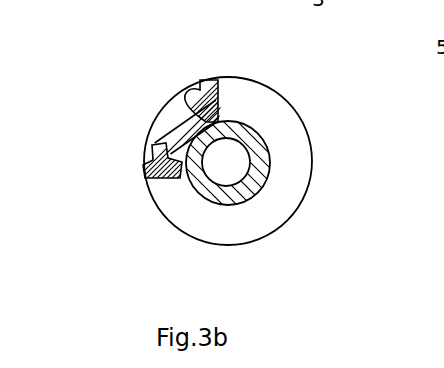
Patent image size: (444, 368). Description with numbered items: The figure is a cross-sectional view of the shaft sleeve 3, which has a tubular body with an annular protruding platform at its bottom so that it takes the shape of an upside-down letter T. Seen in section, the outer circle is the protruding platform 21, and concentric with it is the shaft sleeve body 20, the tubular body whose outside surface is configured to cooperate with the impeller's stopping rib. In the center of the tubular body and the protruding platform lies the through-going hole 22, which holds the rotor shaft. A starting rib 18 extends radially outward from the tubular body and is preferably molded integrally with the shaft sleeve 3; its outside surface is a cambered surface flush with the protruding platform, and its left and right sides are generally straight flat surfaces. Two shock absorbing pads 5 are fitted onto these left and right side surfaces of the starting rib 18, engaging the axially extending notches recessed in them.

The shaft sleeve 3 is at (313, 163).
The shock absorbing pads 5 is at (198, 78).
The starting rib 18 is at (172, 124).
The shaft sleeve body 20 is at (209, 181).
The protruding platform 21 is at (280, 118).
The through-going hole 22 is at (230, 162).